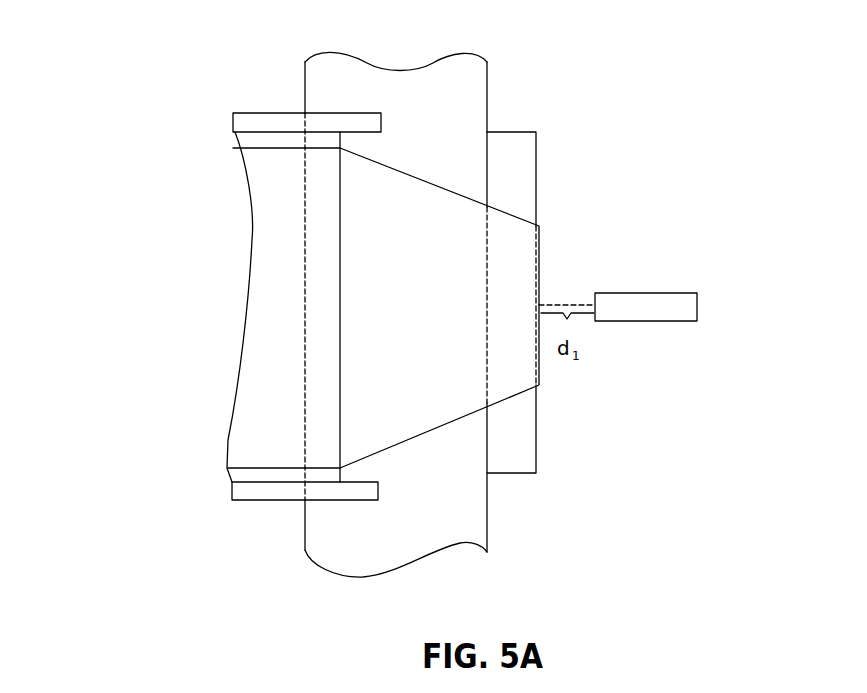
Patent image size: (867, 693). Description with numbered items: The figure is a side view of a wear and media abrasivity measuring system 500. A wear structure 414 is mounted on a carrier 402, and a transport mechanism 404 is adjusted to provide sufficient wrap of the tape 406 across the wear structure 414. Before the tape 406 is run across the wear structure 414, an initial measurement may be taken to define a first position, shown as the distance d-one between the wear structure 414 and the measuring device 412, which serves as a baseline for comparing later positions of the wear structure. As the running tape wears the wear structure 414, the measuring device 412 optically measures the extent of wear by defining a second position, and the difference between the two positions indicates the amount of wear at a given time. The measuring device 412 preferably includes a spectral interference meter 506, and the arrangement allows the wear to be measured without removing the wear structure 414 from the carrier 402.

The carrier 402 is at (457, 543).
The transport mechanism 404 is at (240, 342).
The tape 406 is at (375, 455).
The measuring device 412 is at (730, 340).
The wear structure 414 is at (526, 474).
The system 500 is at (70, 220).
The spectral interference meter 506 is at (653, 322).